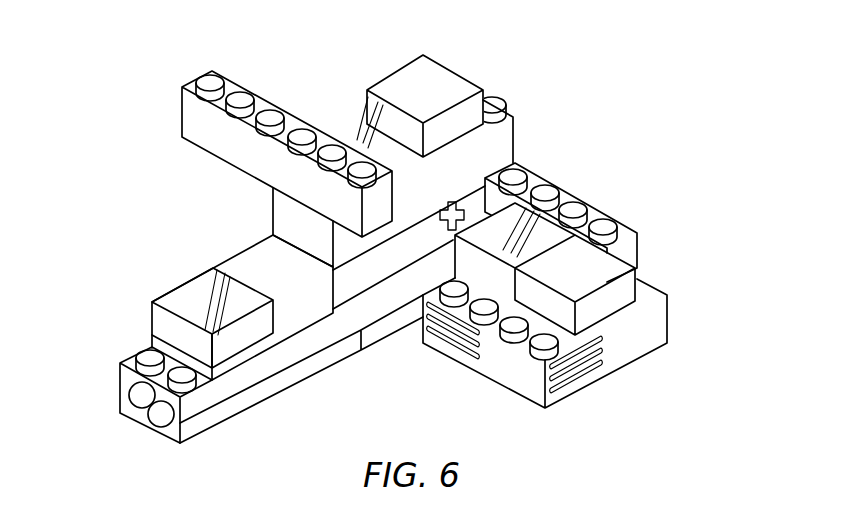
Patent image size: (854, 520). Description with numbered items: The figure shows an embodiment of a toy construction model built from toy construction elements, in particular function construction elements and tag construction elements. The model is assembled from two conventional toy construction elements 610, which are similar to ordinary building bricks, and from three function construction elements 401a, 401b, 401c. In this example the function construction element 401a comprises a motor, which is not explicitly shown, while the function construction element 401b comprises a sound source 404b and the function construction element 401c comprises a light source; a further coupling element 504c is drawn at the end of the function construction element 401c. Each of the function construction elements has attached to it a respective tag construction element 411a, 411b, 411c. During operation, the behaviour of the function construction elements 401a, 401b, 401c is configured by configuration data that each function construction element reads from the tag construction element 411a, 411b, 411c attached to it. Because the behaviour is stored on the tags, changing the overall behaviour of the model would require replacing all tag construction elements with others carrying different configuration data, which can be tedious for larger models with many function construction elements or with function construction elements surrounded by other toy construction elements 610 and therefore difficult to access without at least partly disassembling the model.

The tag construction element 411a is at (433, 83).
The function construction element 401a is at (493, 146).
The conventional toy construction element 610 is at (247, 147).
The tag construction element 411c is at (253, 267).
The function construction element 401c is at (273, 362).
The coupling brick with opening 504c is at (150, 397).
The tag construction element 411b is at (605, 297).
The function construction element 401b is at (618, 336).
The sound source 404b is at (567, 385).